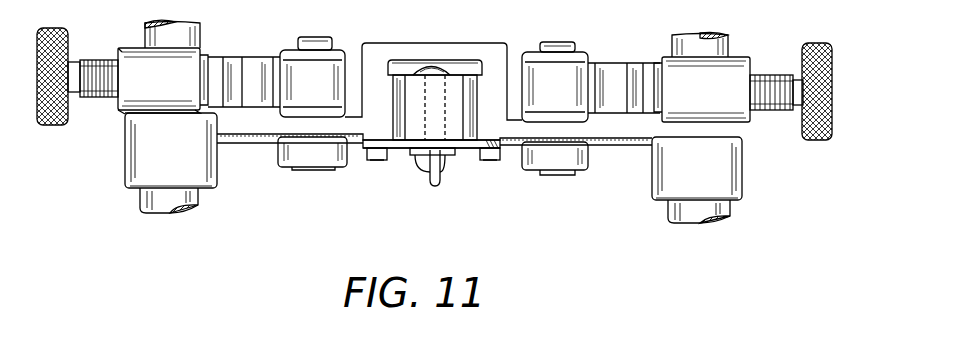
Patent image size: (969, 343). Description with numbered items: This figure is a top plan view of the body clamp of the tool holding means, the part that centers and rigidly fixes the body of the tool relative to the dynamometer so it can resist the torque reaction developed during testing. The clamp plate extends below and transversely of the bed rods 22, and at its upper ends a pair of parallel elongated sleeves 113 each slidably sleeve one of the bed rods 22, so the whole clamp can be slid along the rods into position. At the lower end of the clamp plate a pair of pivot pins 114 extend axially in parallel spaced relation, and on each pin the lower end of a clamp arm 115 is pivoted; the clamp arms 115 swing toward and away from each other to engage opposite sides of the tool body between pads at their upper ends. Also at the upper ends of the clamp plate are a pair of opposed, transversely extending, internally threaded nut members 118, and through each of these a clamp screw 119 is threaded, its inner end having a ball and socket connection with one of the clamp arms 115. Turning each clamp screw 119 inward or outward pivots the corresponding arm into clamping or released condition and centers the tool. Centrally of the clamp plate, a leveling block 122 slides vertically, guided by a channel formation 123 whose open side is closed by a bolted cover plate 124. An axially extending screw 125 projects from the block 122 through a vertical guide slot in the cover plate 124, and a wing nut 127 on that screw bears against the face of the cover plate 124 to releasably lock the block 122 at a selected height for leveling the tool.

The bed rods 22 is at (196, 198).
The elongated sleeves 113 is at (125, 157).
The pivot pins 114 is at (349, 14).
The clamp arm 115 is at (267, 35).
The nut members 118 is at (160, 97).
The clamp screw 119 is at (797, 53).
The leveling block 122 is at (455, 118).
The channel formation 123 is at (401, 60).
The cover plate 124 is at (403, 146).
The screw 125 is at (486, 30).
The wing nut 127 is at (437, 180).